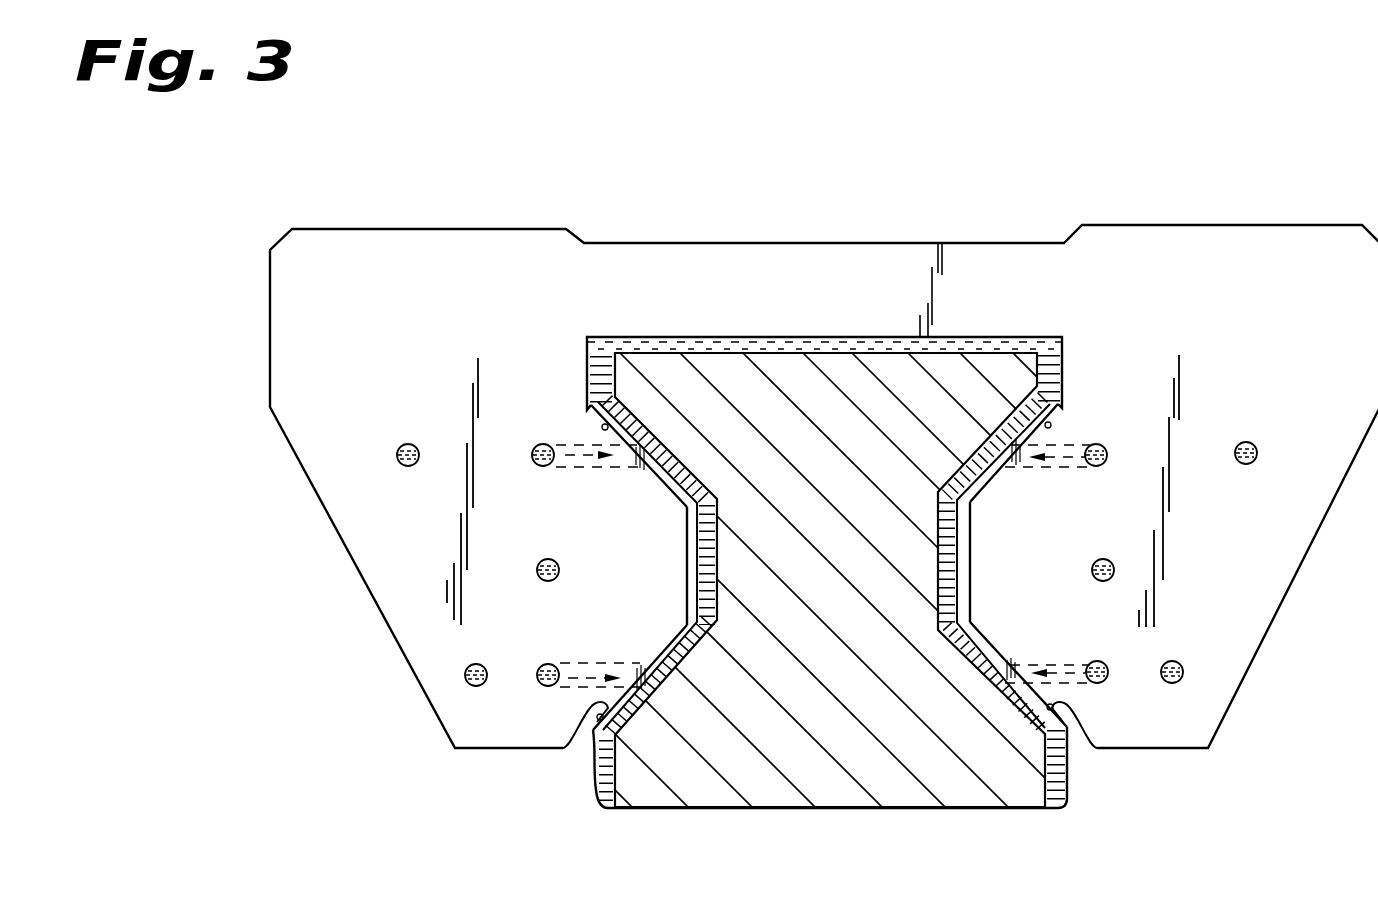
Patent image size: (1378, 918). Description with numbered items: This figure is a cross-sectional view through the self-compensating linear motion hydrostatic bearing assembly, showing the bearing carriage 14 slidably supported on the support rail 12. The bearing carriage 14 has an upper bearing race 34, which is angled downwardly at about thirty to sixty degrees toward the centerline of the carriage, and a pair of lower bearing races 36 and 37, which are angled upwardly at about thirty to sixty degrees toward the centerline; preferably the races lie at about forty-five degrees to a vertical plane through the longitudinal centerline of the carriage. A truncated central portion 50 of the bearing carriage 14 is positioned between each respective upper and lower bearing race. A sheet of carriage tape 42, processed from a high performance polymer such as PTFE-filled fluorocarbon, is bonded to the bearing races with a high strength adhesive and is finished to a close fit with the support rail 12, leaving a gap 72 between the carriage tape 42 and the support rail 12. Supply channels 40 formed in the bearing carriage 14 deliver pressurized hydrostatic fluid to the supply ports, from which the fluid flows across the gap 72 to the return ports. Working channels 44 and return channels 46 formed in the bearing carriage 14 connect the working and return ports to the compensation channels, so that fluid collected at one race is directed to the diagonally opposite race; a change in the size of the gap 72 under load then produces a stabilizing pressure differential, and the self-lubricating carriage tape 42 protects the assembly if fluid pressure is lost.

The support rail 12 is at (883, 772).
The bearing carriage 14 is at (1148, 145).
The upper bearing race 34 is at (593, 424).
The lower bearing race 36 is at (545, 748).
The lower bearing race 37 is at (1100, 715).
The supply channel 40 is at (540, 563).
The carriage tape 42 is at (676, 638).
The working channel 44 is at (538, 445).
The return channel 46 is at (400, 447).
The truncated central portion 50 is at (688, 560).
The gap 72 is at (708, 522).